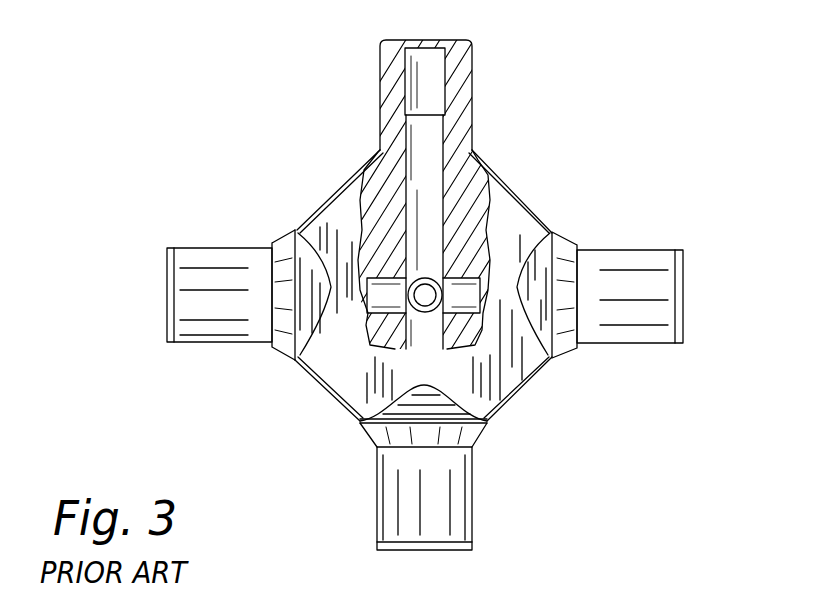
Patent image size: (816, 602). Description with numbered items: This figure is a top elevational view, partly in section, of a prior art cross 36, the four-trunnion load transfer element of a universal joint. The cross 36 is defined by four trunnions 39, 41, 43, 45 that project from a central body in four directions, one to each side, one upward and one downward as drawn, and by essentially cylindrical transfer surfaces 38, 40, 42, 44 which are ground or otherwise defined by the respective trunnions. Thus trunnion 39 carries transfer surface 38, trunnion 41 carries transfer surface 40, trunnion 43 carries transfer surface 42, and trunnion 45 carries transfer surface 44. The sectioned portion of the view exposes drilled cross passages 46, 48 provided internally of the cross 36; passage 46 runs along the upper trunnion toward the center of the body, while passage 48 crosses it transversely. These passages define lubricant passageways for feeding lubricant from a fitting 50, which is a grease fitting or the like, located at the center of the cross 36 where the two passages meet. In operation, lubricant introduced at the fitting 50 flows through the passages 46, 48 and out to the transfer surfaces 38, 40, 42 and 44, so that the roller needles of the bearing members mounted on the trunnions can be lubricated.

The cross 36 is at (382, 240).
The transfer surface 38 is at (210, 343).
The trunnion 39 is at (221, 229).
The transfer surface 40 is at (473, 88).
The trunnion 41 is at (342, 61).
The transfer surface 42 is at (626, 333).
The trunnion 43 is at (630, 228).
The transfer surface 44 is at (458, 497).
The trunnion 45 is at (360, 489).
The cross passage 46 is at (427, 153).
The cross passage 48 is at (462, 294).
The fitting 50 is at (410, 297).